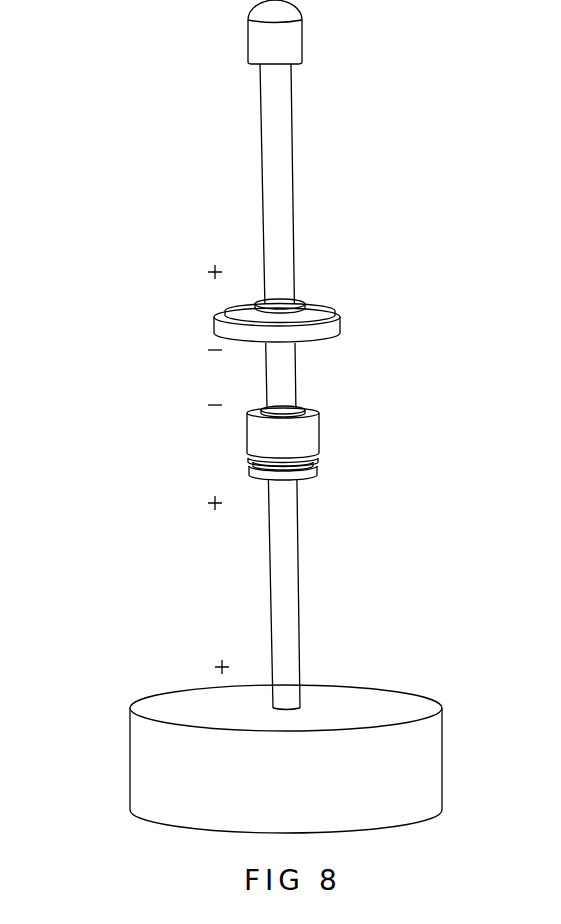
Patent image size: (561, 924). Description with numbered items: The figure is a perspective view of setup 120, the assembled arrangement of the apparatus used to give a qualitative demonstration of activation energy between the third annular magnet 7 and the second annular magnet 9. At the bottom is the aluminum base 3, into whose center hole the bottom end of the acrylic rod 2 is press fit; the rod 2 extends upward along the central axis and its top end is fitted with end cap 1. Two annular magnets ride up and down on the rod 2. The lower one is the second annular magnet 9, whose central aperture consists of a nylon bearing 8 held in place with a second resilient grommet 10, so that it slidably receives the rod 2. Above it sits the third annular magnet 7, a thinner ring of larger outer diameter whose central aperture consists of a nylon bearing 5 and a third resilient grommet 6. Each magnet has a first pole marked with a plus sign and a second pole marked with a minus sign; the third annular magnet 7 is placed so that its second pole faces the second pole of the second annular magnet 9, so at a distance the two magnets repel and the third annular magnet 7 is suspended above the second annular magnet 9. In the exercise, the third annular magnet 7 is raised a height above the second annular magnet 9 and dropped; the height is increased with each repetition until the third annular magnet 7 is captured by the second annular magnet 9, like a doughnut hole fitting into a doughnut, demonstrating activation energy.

The end cap 1 is at (302, 37).
The rod 2 is at (292, 188).
The aluminum base 3 is at (356, 702).
The nylon bearing 5 is at (305, 303).
The third resilient grommet 6 is at (335, 311).
The third annular magnet 7 is at (340, 318).
The nylon bearing 8 is at (305, 407).
The second annular magnet 9 is at (319, 432).
The second resilient grommet 10 is at (313, 466).
The setup 120 is at (165, 227).